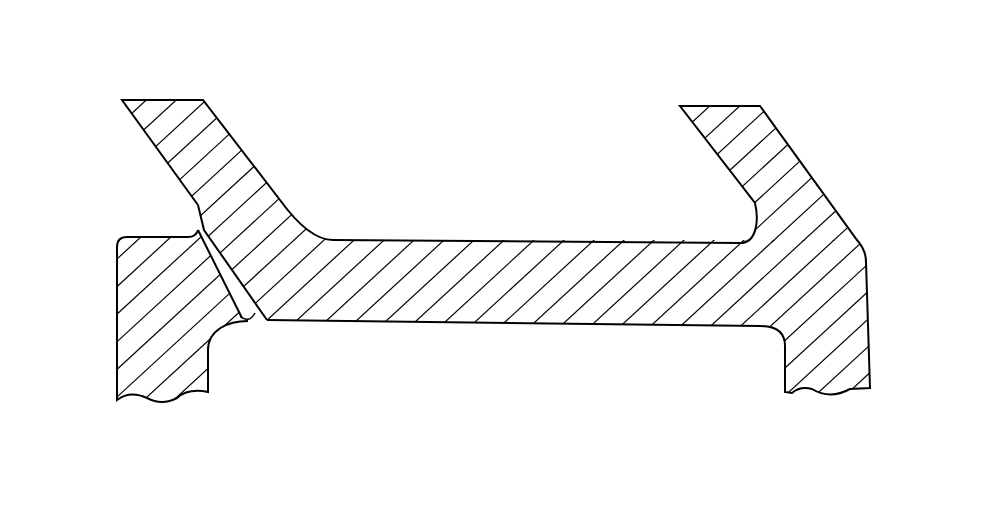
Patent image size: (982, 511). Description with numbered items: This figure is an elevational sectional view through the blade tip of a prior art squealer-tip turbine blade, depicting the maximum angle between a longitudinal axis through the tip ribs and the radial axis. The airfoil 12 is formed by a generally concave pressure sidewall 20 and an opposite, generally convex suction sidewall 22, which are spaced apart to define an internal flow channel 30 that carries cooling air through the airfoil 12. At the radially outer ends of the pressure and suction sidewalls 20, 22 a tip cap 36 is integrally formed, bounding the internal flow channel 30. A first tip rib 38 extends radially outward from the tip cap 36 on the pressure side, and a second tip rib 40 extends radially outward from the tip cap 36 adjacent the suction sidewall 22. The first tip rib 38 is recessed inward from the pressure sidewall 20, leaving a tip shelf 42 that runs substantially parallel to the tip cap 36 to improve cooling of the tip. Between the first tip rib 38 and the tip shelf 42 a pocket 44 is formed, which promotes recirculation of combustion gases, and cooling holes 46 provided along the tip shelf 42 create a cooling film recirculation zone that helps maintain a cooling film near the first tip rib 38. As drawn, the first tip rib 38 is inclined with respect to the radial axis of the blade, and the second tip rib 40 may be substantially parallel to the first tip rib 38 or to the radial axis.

The airfoil 12 is at (338, 62).
The pressure sidewall 20 is at (116, 348).
The suction sidewall 22 is at (873, 338).
The internal flow channel 30 is at (482, 355).
The tip cap 36 is at (485, 270).
The first tip rib 38 is at (188, 112).
The second tip rib 40 is at (718, 142).
The tip shelf 42 is at (126, 237).
The pocket 44 is at (197, 228).
The cooling holes 46 is at (259, 322).